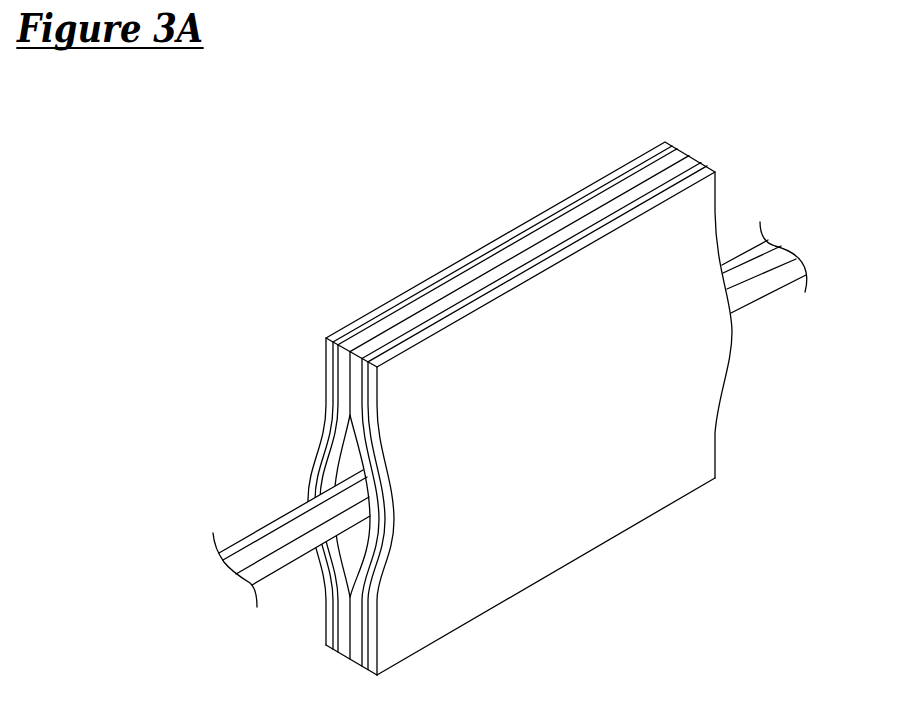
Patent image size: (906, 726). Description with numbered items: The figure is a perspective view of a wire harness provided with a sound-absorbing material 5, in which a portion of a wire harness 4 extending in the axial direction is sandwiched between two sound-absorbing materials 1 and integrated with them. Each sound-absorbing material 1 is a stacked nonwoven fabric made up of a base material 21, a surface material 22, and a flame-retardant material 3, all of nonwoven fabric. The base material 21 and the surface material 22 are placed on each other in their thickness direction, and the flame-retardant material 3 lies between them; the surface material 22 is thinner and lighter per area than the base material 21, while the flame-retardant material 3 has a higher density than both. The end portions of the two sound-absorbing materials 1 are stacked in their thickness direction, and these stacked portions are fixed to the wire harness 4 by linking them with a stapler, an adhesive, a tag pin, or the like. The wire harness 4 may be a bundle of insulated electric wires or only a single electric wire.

The sound-absorbing material 1 is at (677, 140).
The flame-retardant material 3 is at (371, 328).
The wire harness 4 is at (253, 542).
The wire harness provided with a sound-absorbing material 5 is at (150, 199).
The base material 21 is at (342, 418).
The surface material 22 is at (330, 369).